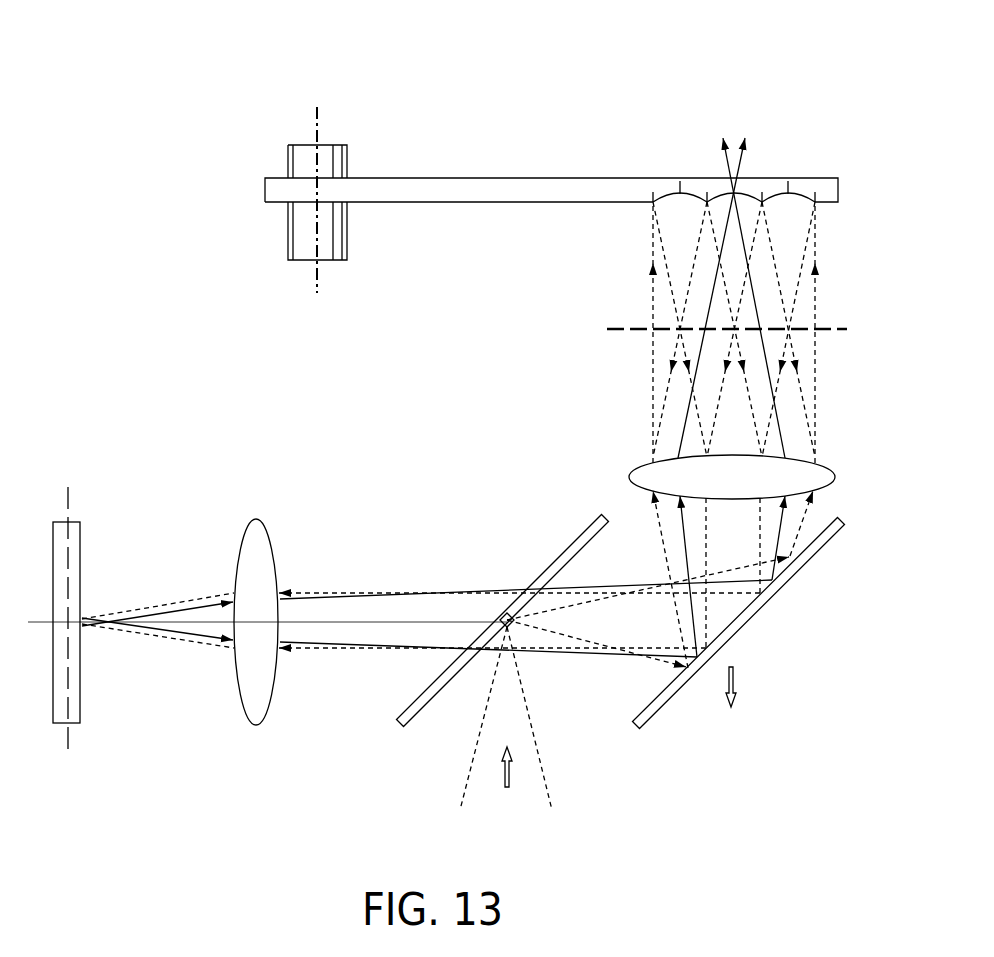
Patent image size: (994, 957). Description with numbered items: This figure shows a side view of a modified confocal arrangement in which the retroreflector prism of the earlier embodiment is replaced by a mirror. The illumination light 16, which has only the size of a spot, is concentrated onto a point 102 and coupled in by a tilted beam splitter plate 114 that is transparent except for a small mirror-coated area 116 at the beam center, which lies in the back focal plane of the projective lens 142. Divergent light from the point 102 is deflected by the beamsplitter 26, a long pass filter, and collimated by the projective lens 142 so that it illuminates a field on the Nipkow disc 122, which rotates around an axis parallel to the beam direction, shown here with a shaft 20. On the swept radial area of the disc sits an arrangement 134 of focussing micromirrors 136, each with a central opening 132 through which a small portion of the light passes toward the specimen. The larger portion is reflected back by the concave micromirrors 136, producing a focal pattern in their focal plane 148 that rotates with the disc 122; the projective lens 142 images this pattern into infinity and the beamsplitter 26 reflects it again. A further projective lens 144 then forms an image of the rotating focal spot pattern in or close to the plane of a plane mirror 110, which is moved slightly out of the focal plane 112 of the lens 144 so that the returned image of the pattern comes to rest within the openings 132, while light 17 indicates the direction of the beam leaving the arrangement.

The Nipkow disc 122 is at (425, 172).
The rotation shaft 20 is at (320, 268).
The focussing micromirrors 136 is at (653, 193).
The opening 132 is at (680, 186).
The arrangement of focussing micromirrors 134 is at (749, 190).
The focal plane of the concave micromirrors 148 is at (630, 329).
The projective lens 142 is at (653, 477).
The tilted beam splitter plate 114 is at (535, 564).
The mirror-coated area 116 is at (505, 612).
The point 102 is at (505, 628).
The illumination light 16 is at (506, 721).
The outgoing light 17 is at (731, 700).
The beamsplitter 26 is at (755, 606).
The plane mirror 110 is at (75, 537).
The focal plane 112 is at (68, 750).
The further projective lens 144 is at (258, 540).